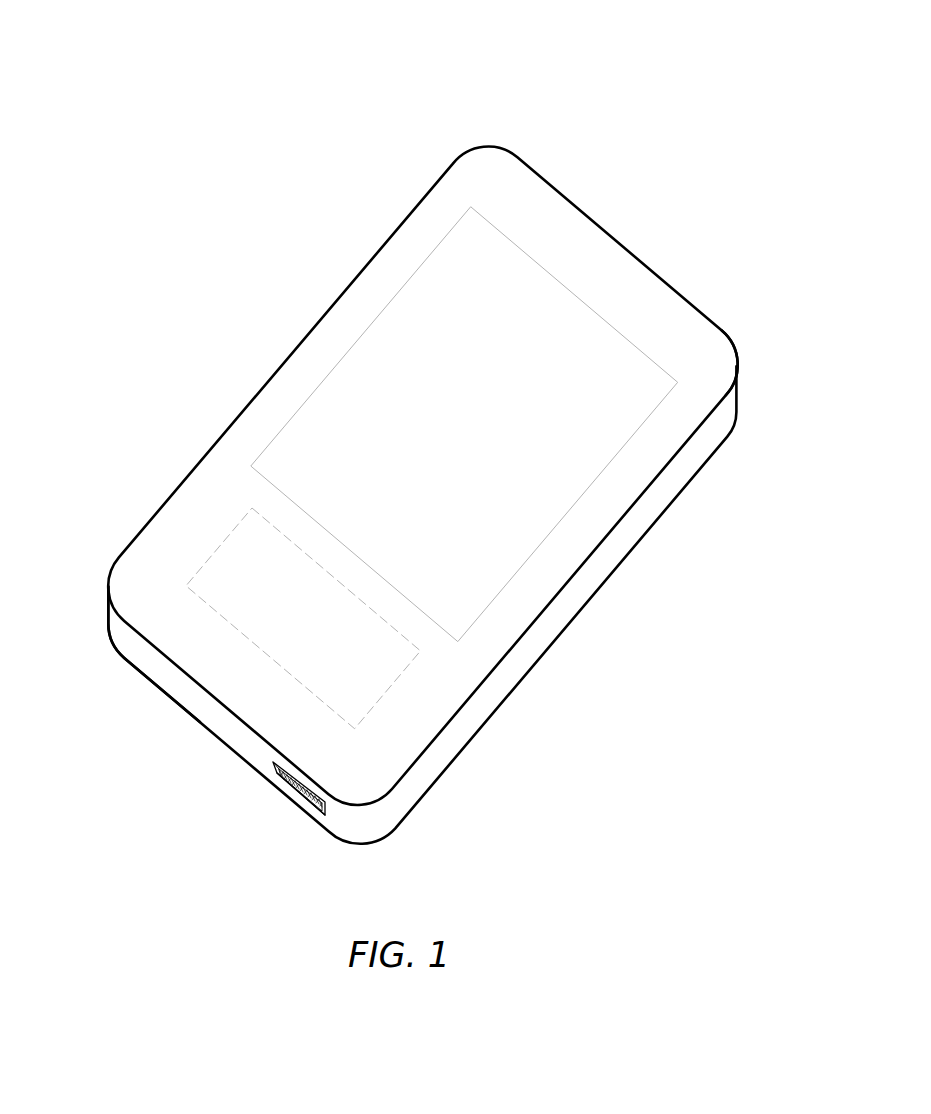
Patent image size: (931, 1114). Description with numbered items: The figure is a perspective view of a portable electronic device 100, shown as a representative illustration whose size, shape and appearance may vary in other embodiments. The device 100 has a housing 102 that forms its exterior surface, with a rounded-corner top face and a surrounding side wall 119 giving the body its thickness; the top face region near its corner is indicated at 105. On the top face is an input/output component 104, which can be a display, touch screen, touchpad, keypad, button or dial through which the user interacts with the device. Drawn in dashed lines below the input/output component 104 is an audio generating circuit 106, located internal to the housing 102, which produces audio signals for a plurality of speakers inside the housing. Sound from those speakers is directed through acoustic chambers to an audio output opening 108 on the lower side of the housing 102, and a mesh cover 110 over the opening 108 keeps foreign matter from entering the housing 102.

The portable electronic device 100 is at (367, 78).
The housing 102 is at (542, 170).
The input/output component 104 is at (489, 346).
The top surface / cover 105 is at (688, 338).
The audio generating circuit 106 is at (395, 682).
The audio output opening 108 is at (268, 767).
The mesh cover 110 is at (295, 800).
The side wall 119 is at (133, 652).